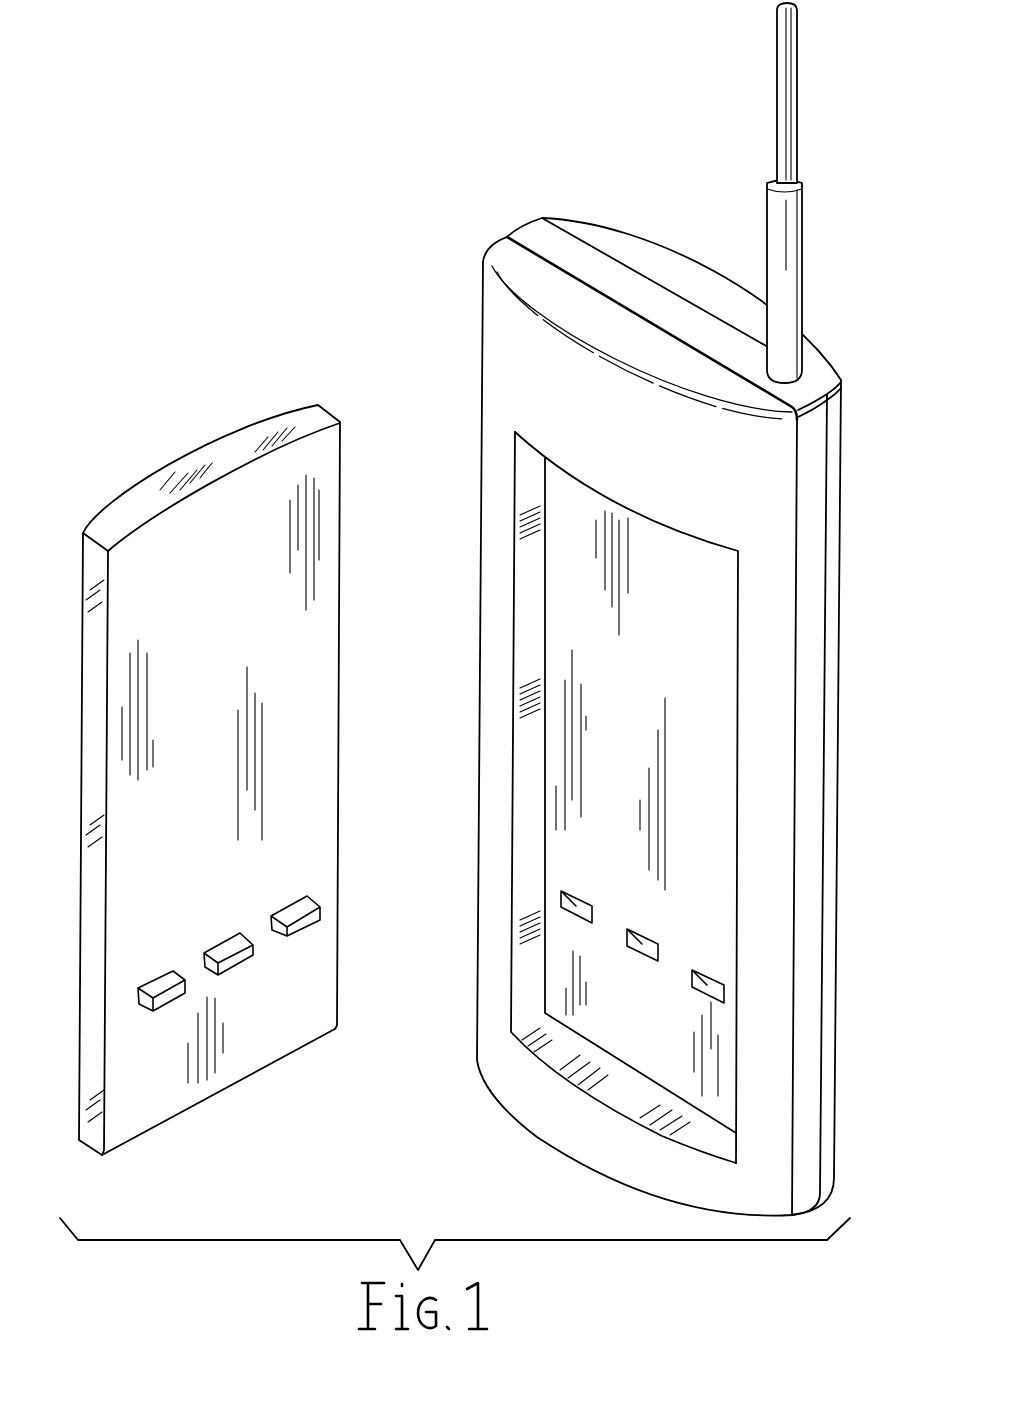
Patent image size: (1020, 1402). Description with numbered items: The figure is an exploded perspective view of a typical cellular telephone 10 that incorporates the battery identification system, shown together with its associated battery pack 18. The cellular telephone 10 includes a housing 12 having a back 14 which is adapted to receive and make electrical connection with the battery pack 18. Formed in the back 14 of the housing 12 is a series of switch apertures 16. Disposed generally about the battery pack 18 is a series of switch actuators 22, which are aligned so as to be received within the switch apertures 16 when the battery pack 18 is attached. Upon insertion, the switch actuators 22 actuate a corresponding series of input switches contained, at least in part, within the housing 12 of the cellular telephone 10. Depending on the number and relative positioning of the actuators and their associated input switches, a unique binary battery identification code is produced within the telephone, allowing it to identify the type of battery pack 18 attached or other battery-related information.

The cellular telephone 10 is at (628, 146).
The housing 12 is at (507, 235).
The back 14 is at (502, 333).
The switch apertures 16 is at (561, 898).
The battery pack 18 is at (227, 433).
The switch actuators 22 is at (168, 1008).